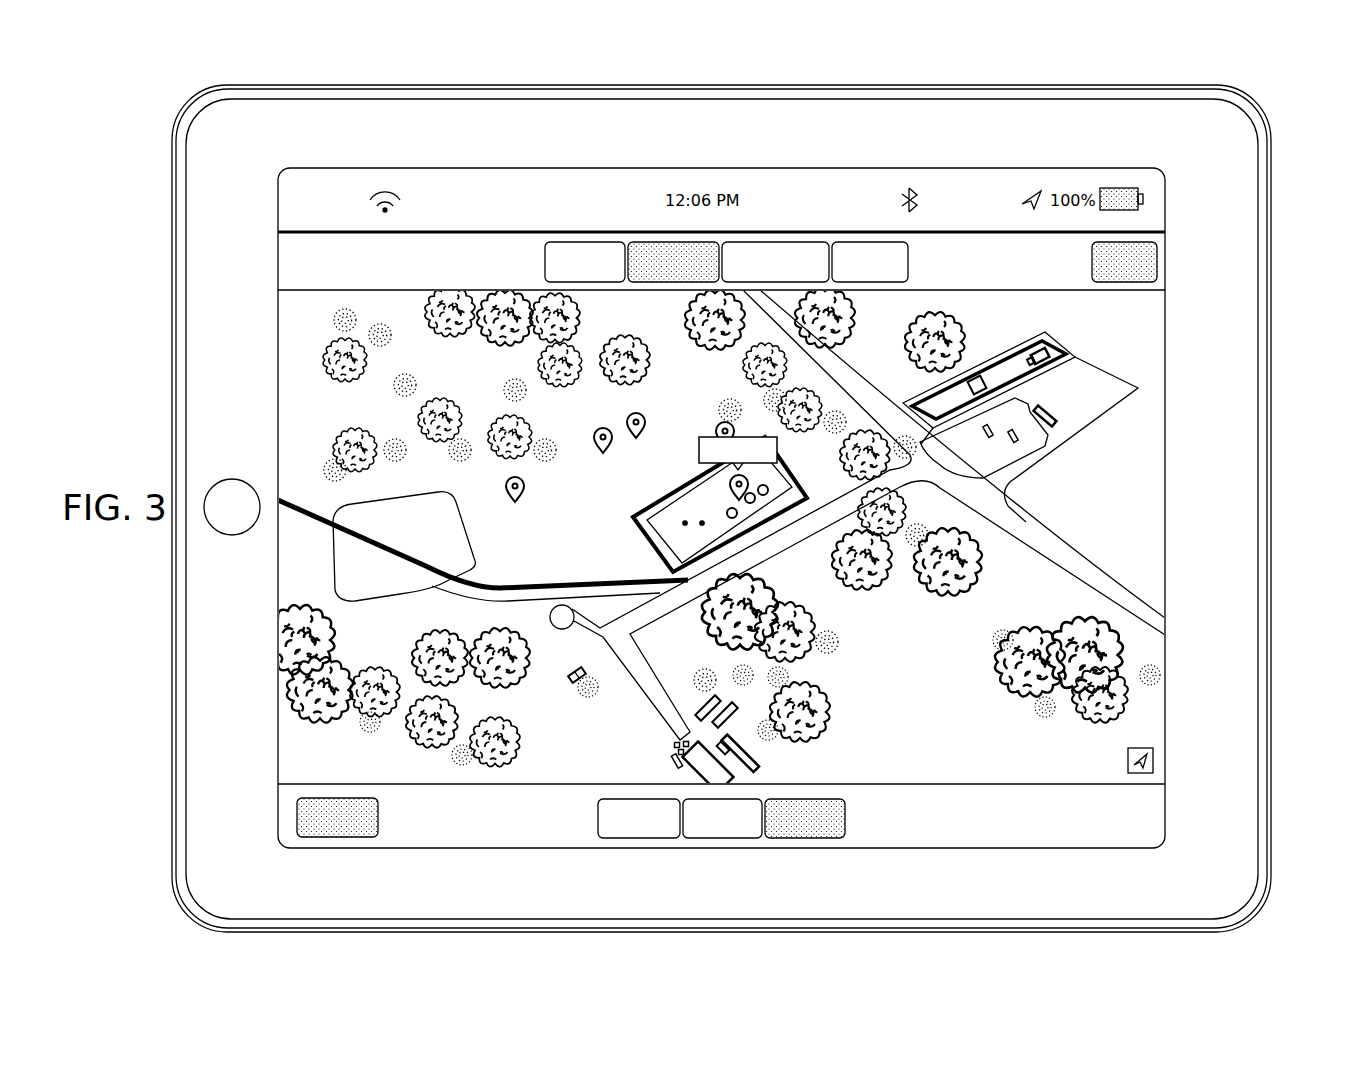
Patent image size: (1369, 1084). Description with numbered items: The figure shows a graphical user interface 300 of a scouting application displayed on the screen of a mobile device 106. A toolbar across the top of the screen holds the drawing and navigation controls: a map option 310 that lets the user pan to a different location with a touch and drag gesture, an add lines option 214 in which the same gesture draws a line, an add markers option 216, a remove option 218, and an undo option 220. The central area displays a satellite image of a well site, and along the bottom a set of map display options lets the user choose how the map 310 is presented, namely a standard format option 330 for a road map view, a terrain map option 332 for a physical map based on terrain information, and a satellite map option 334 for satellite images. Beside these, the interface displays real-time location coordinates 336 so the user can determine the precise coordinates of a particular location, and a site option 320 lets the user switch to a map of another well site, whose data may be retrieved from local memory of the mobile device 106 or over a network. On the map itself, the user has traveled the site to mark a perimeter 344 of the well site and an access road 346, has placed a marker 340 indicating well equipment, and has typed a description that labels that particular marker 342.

The mobile device 106 is at (1272, 369).
The graphical user interface 300 is at (272, 235).
The map option 310 is at (573, 242).
The add lines option 214 is at (642, 242).
The add markers option 216 is at (792, 242).
The remove option 218 is at (852, 242).
The undo option 220 is at (1153, 266).
The site option 320 is at (337, 838).
The standard format option 330 is at (638, 838).
The terrain map option 332 is at (722, 838).
The satellite map option 334 is at (805, 838).
The real-time location coordinates 336 is at (928, 853).
The marker 340 is at (725, 492).
The marker label 342 is at (710, 436).
The perimeter 344 is at (798, 482).
The access road 346 is at (600, 582).